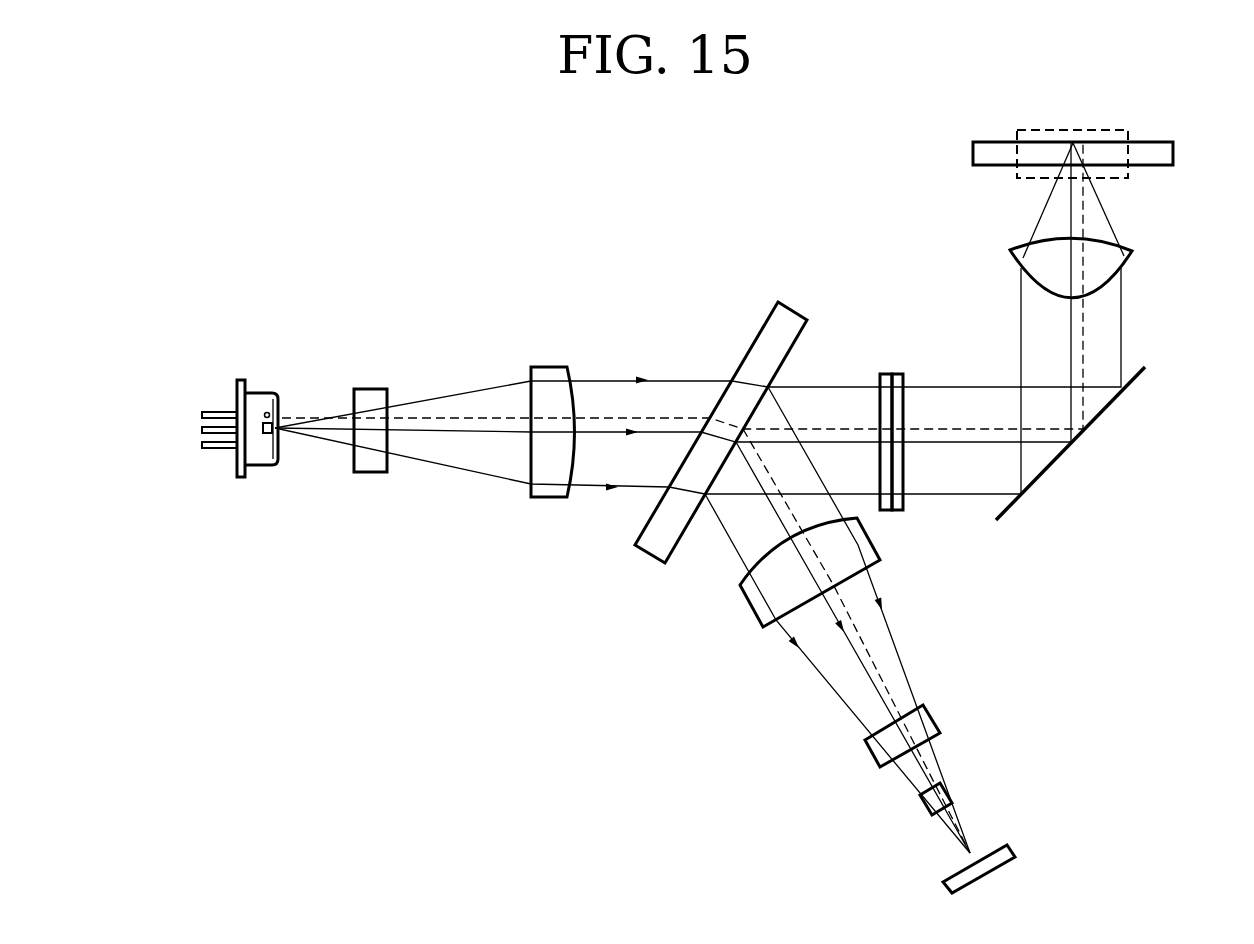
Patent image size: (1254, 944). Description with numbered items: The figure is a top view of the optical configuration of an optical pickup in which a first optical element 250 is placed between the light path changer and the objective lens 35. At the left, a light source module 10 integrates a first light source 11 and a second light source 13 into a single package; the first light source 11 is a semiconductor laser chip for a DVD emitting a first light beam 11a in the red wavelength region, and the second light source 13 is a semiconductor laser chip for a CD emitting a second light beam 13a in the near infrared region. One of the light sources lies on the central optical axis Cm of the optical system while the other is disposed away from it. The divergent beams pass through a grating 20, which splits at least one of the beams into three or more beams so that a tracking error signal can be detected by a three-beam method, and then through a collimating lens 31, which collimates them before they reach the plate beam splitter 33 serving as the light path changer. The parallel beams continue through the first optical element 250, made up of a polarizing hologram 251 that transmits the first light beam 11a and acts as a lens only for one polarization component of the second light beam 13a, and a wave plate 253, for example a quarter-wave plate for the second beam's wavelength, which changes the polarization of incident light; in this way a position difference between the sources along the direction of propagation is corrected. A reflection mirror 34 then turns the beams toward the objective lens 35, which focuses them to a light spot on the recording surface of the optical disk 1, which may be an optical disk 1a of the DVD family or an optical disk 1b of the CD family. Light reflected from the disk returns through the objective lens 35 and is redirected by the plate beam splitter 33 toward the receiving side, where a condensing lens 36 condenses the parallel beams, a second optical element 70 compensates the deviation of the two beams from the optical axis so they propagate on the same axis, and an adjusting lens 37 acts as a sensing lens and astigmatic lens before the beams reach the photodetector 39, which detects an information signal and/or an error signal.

The optical disk 1 is at (1054, 161).
The optical disk in a DVD family 1a is at (1170, 153).
The optical disk in a CD family 1b is at (1130, 172).
The light source module 10 is at (212, 418).
The first light source 11 is at (267, 467).
The first light beam 11a is at (427, 461).
The second light source 13 is at (267, 393).
The second light beam 13a is at (437, 417).
The central optical axis Cm is at (508, 434).
The grating 20 is at (373, 389).
The collimating lens 31 is at (549, 367).
The plate beam splitter 33 is at (787, 312).
The reflection mirror 34 is at (1050, 468).
The objective lens 35 is at (1132, 253).
The condensing lens 36 is at (755, 607).
The adjusting lens 37 is at (950, 793).
The photodetector 39 is at (1010, 853).
The second optical element 70 is at (930, 720).
The first optical element 250 is at (916, 458).
The polarizing hologram 251 is at (885, 378).
The wave plate 253 is at (900, 380).